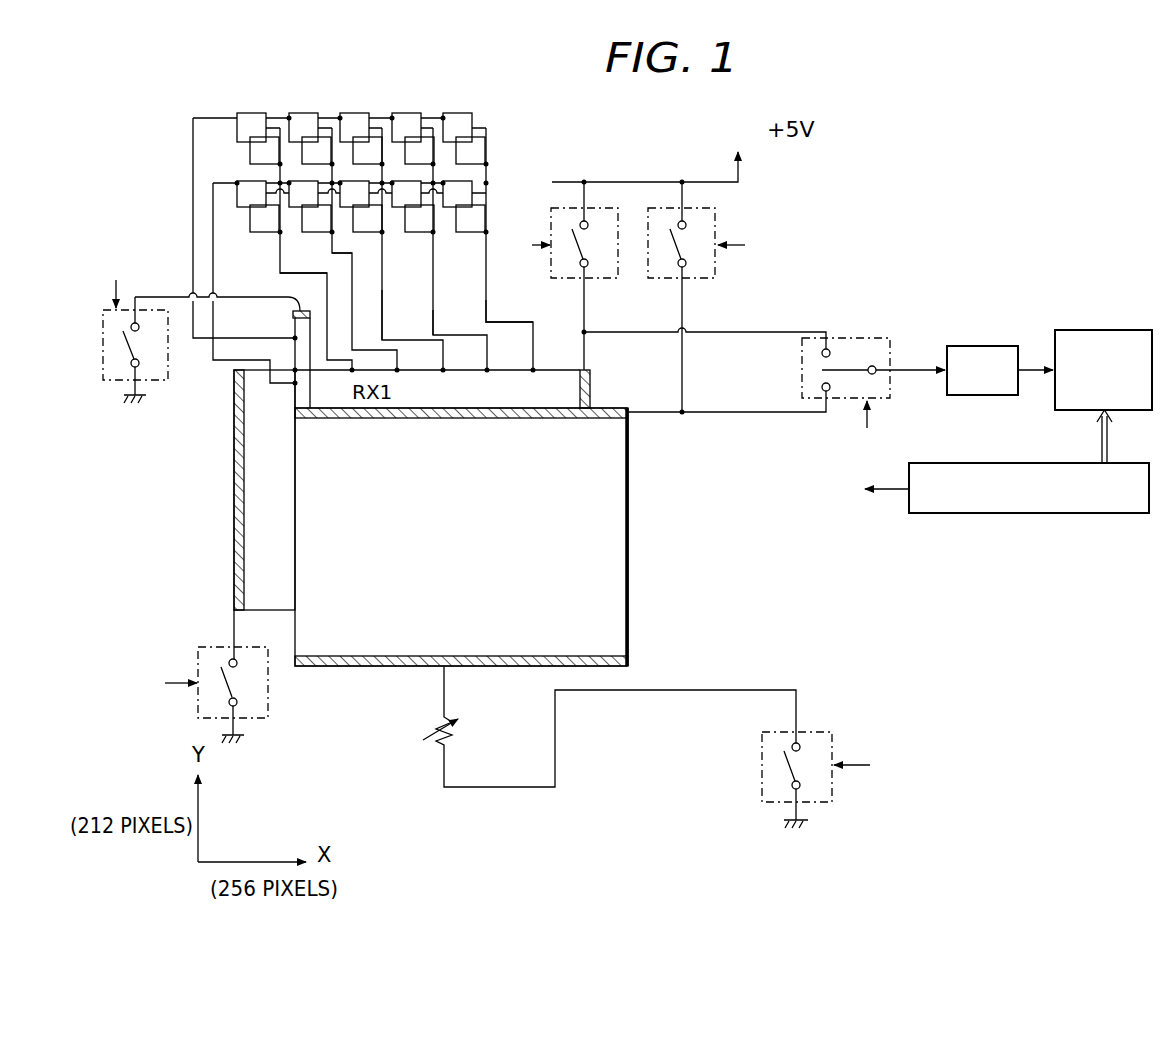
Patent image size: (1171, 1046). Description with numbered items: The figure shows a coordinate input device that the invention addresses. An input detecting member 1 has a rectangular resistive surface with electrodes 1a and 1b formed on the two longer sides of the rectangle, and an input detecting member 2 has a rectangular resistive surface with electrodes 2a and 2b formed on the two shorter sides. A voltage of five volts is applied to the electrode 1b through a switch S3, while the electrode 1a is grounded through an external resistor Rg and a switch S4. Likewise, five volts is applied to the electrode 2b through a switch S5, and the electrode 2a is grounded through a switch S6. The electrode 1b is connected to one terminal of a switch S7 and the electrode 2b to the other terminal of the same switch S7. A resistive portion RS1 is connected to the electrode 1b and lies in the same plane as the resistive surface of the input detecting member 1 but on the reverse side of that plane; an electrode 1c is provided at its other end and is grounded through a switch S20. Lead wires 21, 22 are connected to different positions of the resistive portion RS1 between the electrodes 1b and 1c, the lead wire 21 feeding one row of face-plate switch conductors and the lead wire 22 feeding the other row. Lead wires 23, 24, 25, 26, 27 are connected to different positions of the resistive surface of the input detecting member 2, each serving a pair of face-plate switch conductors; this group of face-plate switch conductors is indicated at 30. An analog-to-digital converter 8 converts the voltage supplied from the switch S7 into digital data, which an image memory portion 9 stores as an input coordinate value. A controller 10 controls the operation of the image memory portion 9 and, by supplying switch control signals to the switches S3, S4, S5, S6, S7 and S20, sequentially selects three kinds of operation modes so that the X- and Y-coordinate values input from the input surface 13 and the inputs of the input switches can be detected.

The input detecting member 1 is at (630, 539).
The electrode 1a is at (626, 662).
The electrode 1b is at (586, 418).
The electrode 1c is at (296, 311).
The input detecting member 2 is at (254, 458).
The electrode 2a is at (243, 547).
The electrode 2b is at (592, 386).
The analog-to-digital converter 8 is at (982, 346).
The image memory portion 9 is at (1112, 330).
The controller 10 is at (1075, 513).
The input surface 13 is at (633, 579).
The lead wire 21 is at (240, 338).
The lead wire 22 is at (212, 356).
The lead wire 23 is at (326, 272).
The lead wire 24 is at (334, 258).
The lead wire 25 is at (382, 298).
The lead wire 26 is at (433, 318).
The lead wire 27 is at (487, 308).
The switch array 30 is at (493, 132).
The switch S3 is at (717, 231).
The switch S4 is at (832, 734).
The switch S5 is at (551, 212).
The switch S6 is at (268, 688).
The switch S7 is at (878, 338).
The switch S20 is at (103, 343).
The external resistor Rg is at (609, 726).
The resistive portion RS1 is at (299, 326).